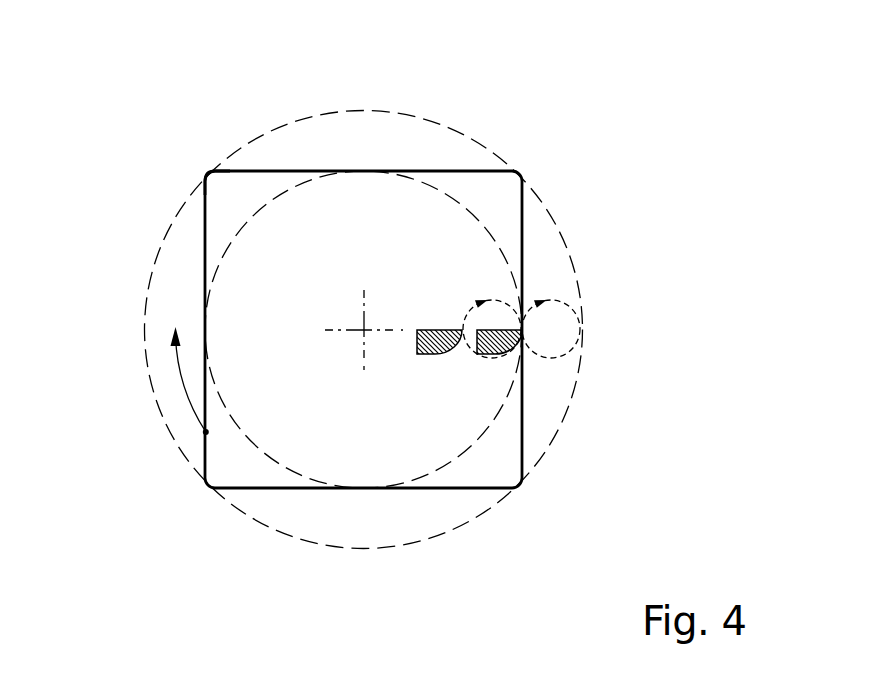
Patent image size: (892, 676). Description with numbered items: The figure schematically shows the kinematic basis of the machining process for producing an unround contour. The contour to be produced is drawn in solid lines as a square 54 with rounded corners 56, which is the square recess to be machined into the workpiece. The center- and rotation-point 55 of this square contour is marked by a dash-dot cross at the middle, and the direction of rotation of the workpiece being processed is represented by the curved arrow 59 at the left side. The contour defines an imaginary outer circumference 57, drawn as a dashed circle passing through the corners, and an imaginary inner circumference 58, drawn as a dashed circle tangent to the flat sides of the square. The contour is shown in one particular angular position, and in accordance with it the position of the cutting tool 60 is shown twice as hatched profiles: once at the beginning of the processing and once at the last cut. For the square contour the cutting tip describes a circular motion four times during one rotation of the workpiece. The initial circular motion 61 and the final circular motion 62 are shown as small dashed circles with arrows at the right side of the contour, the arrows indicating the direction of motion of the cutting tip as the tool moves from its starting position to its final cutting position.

The square 54 is at (272, 171).
The center- and rotation-point 55 is at (344, 330).
The rounded corners 56 is at (207, 172).
The imaginary outer circumference 57 is at (363, 110).
The imaginary inner circumference 58 is at (442, 192).
The arrow 59 is at (163, 348).
The cutting tool 60 is at (493, 342).
The initial circular motion 61 is at (470, 309).
The final circular motion 62 is at (575, 309).